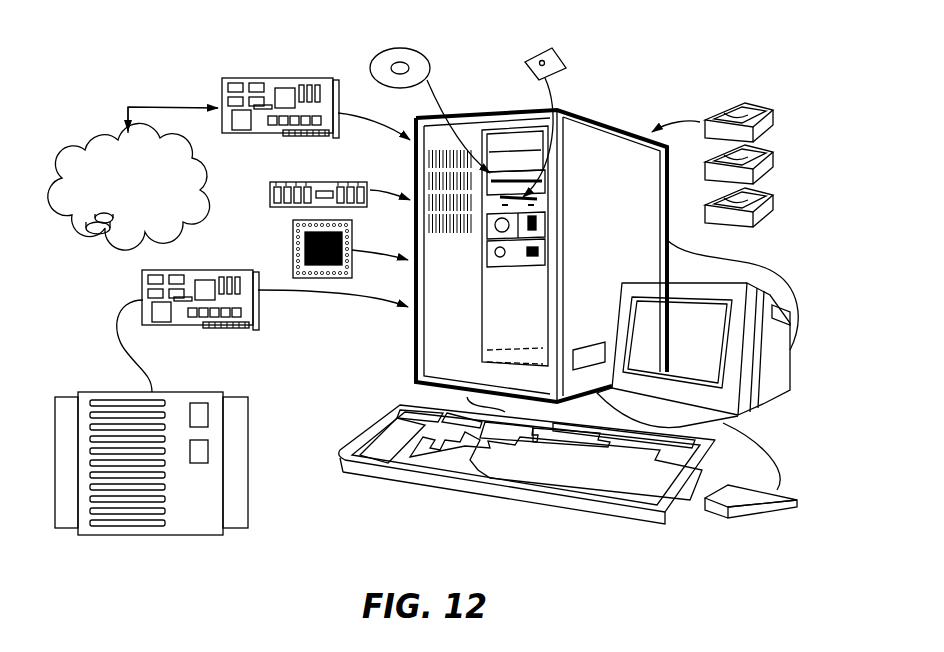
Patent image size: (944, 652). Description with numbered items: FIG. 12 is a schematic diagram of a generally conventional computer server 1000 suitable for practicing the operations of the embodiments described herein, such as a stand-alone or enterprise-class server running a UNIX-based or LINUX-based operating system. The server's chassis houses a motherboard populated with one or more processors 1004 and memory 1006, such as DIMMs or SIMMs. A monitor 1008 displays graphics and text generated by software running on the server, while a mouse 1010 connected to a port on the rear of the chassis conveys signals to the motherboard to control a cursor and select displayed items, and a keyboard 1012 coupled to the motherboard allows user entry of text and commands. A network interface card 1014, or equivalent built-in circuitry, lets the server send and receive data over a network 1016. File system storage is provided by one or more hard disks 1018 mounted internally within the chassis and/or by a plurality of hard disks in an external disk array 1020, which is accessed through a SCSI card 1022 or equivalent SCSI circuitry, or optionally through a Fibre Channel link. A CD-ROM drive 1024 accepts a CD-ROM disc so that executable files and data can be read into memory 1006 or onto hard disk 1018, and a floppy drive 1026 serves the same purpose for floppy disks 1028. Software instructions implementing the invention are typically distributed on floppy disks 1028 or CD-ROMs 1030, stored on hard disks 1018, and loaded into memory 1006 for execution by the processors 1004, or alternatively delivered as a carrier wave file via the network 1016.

The computer server 1000 is at (388, 488).
The processor 1004 is at (293, 245).
The memory 1006 is at (275, 197).
The monitor 1008 is at (775, 382).
The mouse 1010 is at (777, 513).
The keyboard 1012 is at (550, 483).
The network interface card 1014 is at (222, 88).
The network 1016 is at (163, 215).
The hard disk 1018 is at (732, 107).
The external disk array 1020 is at (248, 458).
The SCSI card 1022 is at (250, 312).
The CD-ROM drive 1024 is at (518, 176).
The floppy drive 1026 is at (543, 198).
The floppy disk 1028 is at (556, 57).
The CD-ROM disc 1030 is at (424, 62).